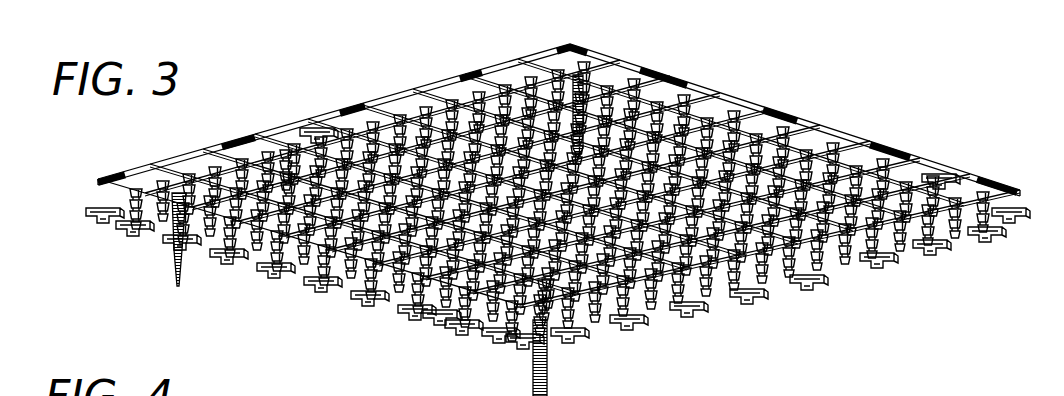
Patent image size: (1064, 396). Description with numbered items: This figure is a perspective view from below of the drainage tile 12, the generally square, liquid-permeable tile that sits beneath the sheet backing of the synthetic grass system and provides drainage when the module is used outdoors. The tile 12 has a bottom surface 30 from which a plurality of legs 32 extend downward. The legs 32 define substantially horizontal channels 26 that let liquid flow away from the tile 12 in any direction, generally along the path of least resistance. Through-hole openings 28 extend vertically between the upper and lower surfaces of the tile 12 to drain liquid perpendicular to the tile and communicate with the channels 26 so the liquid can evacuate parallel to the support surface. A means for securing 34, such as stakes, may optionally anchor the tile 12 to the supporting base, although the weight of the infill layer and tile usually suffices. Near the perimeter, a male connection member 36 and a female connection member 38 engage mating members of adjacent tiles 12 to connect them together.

The tile 12 is at (326, 71).
The channels 26 is at (318, 128).
The through-hole openings 28 is at (482, 76).
The bottom surface 30 is at (742, 112).
The legs 32 is at (285, 148).
The means for securing 34 is at (600, 72).
The male connection member 36 is at (938, 176).
The female connection member 38 is at (882, 268).